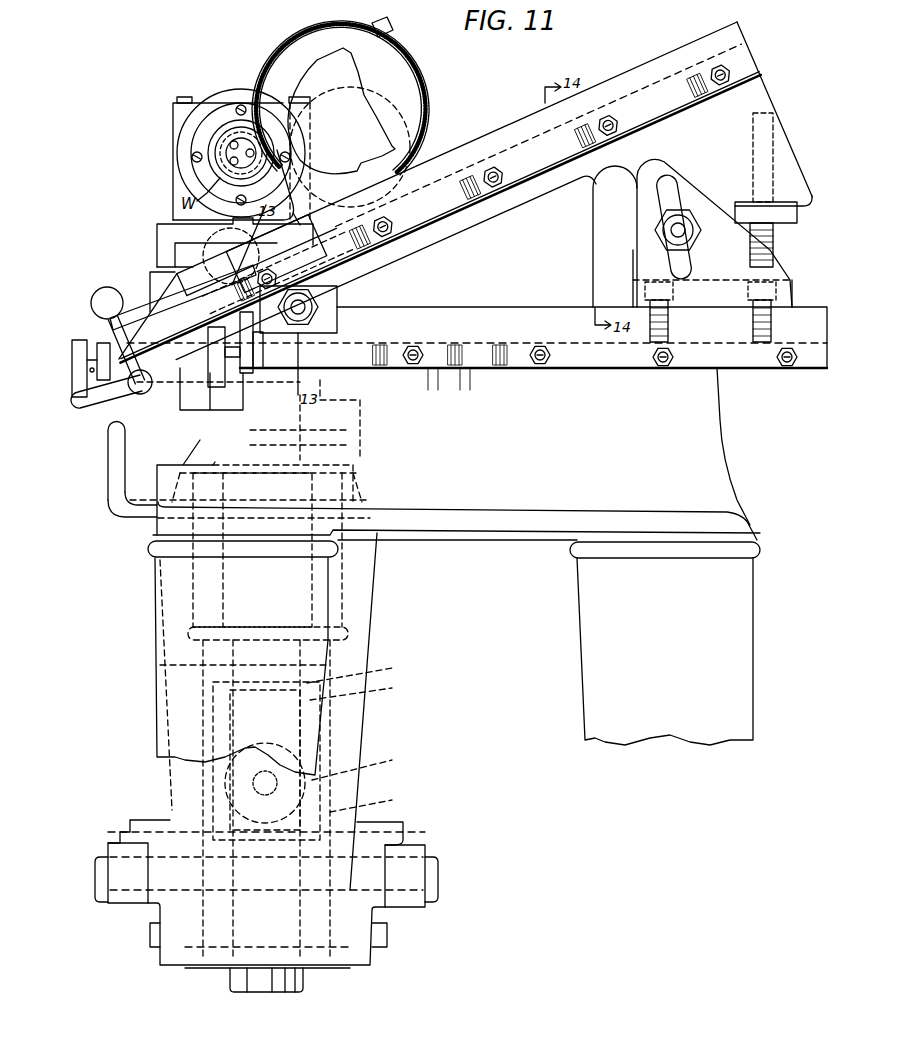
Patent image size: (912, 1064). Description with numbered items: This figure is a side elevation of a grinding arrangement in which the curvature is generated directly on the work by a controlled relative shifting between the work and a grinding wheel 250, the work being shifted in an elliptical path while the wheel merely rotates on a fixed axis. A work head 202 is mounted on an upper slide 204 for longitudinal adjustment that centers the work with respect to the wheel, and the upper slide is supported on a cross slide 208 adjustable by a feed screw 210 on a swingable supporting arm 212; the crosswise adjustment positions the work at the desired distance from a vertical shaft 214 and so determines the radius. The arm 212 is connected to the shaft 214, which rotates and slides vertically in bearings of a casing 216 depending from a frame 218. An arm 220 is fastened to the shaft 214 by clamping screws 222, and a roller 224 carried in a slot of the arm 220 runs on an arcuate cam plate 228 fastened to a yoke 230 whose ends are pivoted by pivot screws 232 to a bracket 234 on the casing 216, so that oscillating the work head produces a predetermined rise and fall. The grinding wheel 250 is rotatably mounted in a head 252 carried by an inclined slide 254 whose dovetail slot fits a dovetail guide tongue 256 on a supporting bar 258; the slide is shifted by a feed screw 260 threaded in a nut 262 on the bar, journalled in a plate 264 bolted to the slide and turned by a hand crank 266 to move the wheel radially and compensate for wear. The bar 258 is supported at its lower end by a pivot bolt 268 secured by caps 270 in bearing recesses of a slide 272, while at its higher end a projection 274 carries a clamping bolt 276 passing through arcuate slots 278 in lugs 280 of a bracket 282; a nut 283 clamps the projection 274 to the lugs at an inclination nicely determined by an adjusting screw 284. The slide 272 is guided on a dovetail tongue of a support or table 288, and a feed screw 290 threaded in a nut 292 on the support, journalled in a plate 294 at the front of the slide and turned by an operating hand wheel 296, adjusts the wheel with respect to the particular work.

The work head 202 is at (173, 157).
The upper slide 204 is at (165, 228).
The cross slide 208 is at (150, 286).
The feed screw 210 is at (80, 342).
The swingable supporting arm 212 is at (362, 402).
The vertical shaft 214 is at (320, 608).
The casing 216 is at (370, 641).
The frame 218 is at (470, 522).
The arm 220 is at (368, 703).
The clamping screws 222 is at (314, 690).
The roller 224 is at (322, 776).
The arcuate cam plate 228 is at (372, 812).
The yoke 230 is at (410, 842).
The pivot screws 232 is at (440, 882).
The bracket 234 is at (374, 950).
The grinding wheel 250 is at (258, 60).
The head 252 is at (405, 96).
The inclined slide 254 is at (470, 147).
The dovetail guide tongue 256 is at (540, 106).
The supporting bar 258 is at (497, 212).
The feed screw 260 is at (457, 217).
The nut 262 is at (408, 252).
The plate 264 is at (162, 250).
The hand crank 266 is at (92, 414).
The pivot bolt 268 is at (333, 302).
The caps 270 is at (330, 286).
The slide 272 is at (462, 320).
The projection 274 is at (738, 172).
The clamping bolt 276 is at (671, 232).
The arcuate slots 278 is at (670, 182).
The lugs 280 is at (637, 228).
The bracket 282 is at (787, 293).
The nut 283 is at (660, 250).
The adjusting screw 284 is at (780, 246).
The support or table 288 is at (707, 418).
The feed screw 290 is at (513, 370).
The nut 292 is at (474, 370).
The plate 294 is at (245, 384).
The operating hand wheel 296 is at (207, 366).